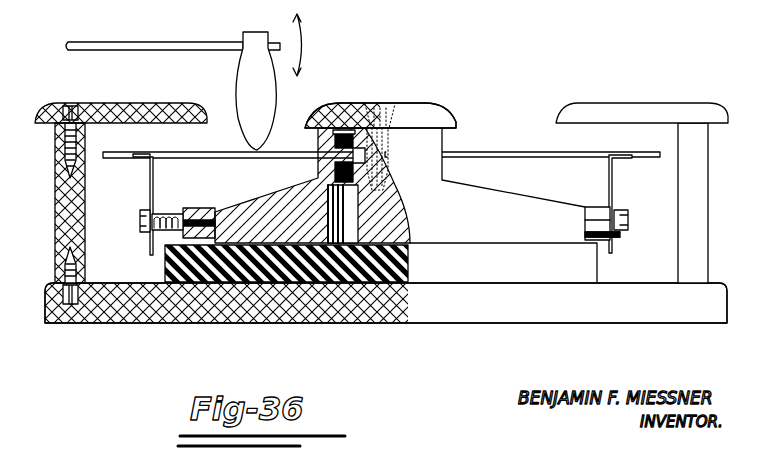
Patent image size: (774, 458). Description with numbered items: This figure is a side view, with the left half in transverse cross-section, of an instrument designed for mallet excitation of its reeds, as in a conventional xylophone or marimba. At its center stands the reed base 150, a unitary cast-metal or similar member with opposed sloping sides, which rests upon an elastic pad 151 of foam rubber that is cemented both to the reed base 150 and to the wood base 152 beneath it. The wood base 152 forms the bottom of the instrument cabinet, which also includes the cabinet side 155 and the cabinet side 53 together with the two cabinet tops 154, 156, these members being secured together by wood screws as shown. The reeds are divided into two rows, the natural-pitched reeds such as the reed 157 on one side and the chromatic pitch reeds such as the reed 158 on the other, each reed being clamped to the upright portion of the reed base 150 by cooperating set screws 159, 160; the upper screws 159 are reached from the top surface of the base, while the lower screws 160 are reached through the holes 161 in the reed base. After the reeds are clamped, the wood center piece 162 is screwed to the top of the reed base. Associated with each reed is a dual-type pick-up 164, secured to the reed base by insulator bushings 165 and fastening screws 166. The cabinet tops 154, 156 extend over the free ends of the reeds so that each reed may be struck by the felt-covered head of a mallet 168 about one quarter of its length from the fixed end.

The side wall post 53 is at (60, 197).
The reed base 150 is at (406, 171).
The elastic pad 151 is at (410, 259).
The wood base 152 is at (145, 323).
The cabinet top 154 is at (137, 103).
The cabinet side 155 is at (710, 196).
The cabinet top 156 is at (655, 103).
The natural-pitched reed 157 is at (222, 150).
The chromatic pitch reed 158 is at (537, 151).
The upper set screw 159 is at (345, 138).
The lower set screw 160 is at (337, 176).
The hole 161 is at (362, 212).
The wood center piece 162 is at (415, 115).
The dual-type pick-up 164 is at (148, 174).
The insulator bushing 165 is at (165, 212).
The fastening screw 166 is at (140, 232).
The mallet 168 is at (200, 43).